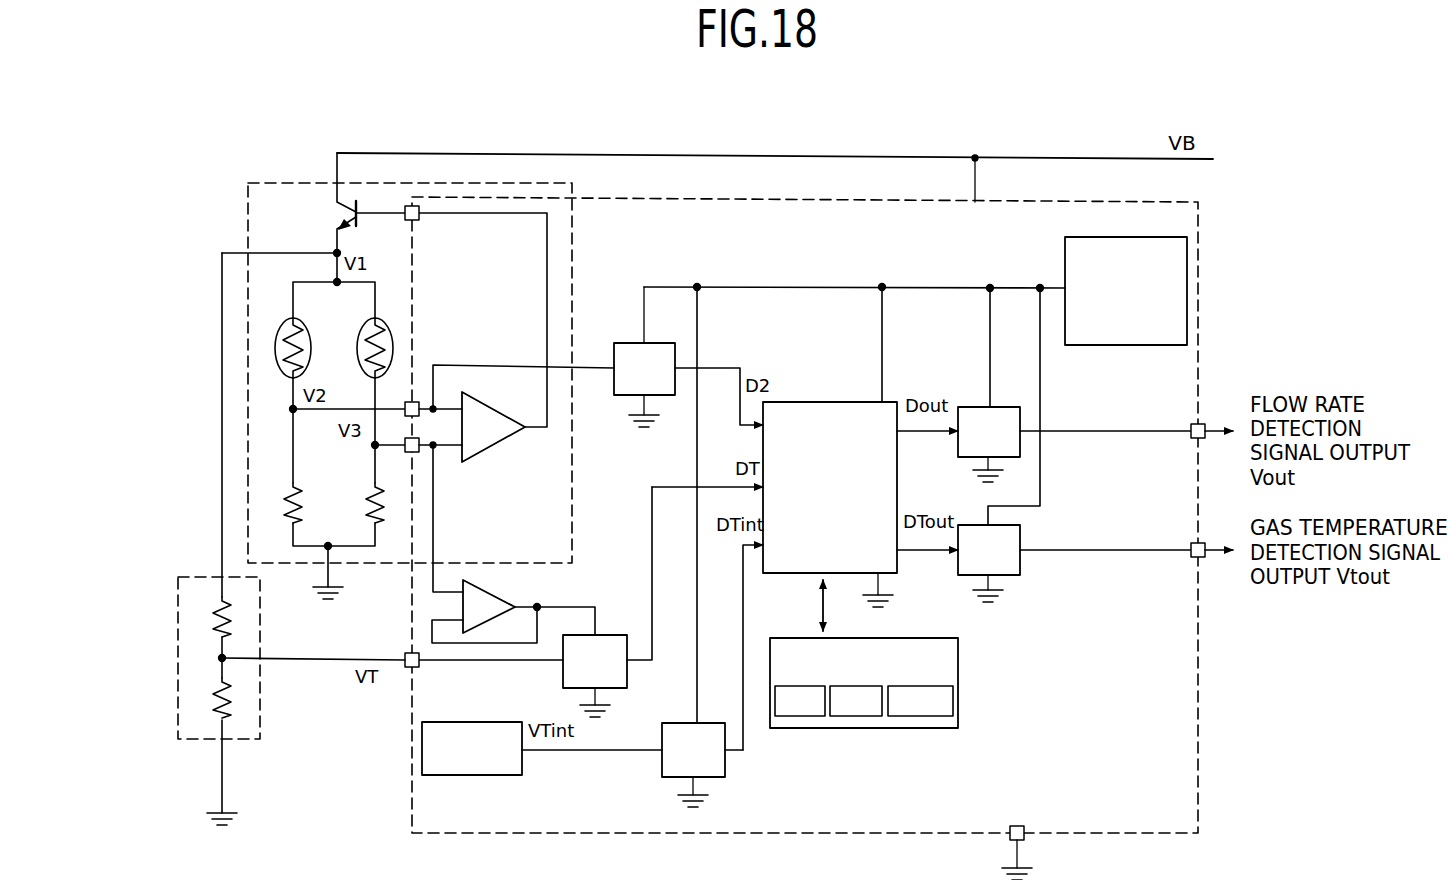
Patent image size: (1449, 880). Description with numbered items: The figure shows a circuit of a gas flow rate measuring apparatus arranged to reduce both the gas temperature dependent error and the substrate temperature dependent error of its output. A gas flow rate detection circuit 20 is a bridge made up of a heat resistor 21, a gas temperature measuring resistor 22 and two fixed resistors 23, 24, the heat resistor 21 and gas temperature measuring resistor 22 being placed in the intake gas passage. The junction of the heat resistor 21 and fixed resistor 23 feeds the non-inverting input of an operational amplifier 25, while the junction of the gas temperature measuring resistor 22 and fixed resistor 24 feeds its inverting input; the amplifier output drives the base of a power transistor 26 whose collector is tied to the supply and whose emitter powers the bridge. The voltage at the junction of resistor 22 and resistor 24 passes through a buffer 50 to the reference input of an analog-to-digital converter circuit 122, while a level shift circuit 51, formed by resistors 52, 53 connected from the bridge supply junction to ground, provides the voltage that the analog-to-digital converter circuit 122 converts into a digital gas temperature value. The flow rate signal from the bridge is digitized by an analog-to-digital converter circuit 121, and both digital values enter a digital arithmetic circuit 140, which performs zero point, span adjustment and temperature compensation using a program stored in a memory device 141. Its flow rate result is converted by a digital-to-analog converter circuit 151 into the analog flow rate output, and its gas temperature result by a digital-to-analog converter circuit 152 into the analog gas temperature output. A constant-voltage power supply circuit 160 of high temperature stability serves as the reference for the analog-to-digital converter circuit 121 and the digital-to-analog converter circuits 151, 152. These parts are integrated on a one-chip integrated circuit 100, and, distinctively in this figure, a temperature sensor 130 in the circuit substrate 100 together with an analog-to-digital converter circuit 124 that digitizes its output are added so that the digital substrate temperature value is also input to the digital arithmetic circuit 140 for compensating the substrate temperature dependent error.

The gas flow rate detection circuit 20 is at (263, 183).
The heat resistor 21 is at (275, 340).
The gas temperature measuring resistor 22 is at (370, 320).
The fixed resistor 23 is at (277, 500).
The fixed resistor 24 is at (364, 483).
The operational amplifier 25 is at (487, 392).
The power transistor 26 is at (360, 200).
The buffer 50 is at (463, 606).
The level shift circuit 51 is at (188, 632).
The resistor 52 is at (202, 616).
The resistor 53 is at (202, 700).
The one-chip integrated circuit 100 is at (410, 776).
The A/D converter circuit 121 is at (622, 343).
The A/D converter circuit 122 is at (610, 635).
The A/D converter circuit 124 is at (662, 768).
The temperature sensor 130 is at (470, 775).
The digital arithmetic circuit 140 is at (818, 402).
The memory device 141 is at (850, 728).
The D/A converter circuit 151 is at (965, 407).
The D/A converter circuit 152 is at (1020, 560).
The constant-voltage power supply circuit 160 is at (1112, 345).